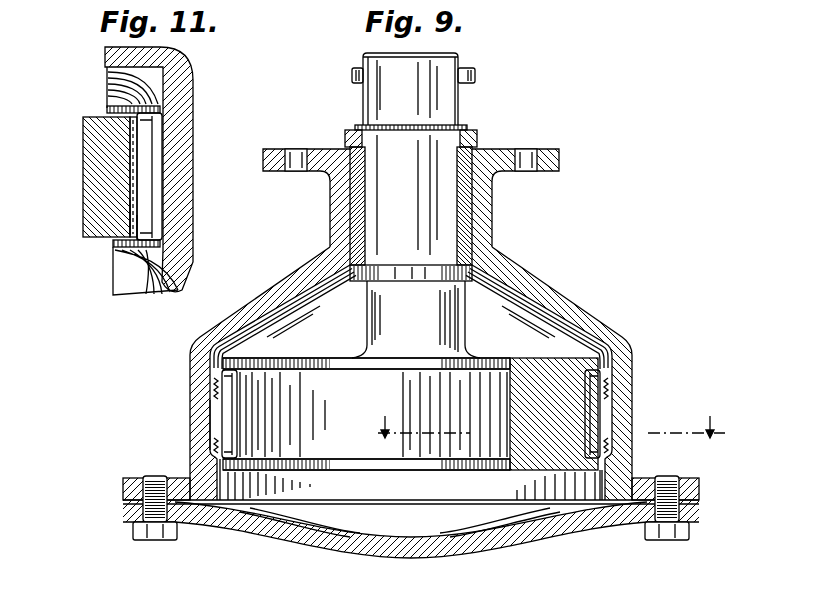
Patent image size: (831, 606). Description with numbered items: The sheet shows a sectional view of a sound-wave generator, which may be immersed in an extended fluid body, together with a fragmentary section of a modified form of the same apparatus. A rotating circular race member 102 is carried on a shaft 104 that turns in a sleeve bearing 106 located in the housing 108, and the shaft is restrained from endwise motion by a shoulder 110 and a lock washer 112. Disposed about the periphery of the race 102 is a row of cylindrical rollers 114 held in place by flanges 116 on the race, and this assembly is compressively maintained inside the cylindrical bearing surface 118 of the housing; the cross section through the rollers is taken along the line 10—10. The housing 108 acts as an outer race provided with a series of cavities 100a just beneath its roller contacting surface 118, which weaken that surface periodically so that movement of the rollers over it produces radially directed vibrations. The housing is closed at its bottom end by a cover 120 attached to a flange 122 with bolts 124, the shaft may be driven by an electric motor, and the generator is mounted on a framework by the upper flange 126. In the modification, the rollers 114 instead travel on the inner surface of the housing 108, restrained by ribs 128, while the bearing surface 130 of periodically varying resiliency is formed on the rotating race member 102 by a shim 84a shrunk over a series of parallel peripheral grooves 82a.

In FIG. 9, the section line 10 is at (551, 419).
In FIG. 11, the parallel peripheral grooves 82a is at (128, 212).
In FIG. 11, the shim 84a is at (137, 228).
In FIG. 9, the cavities 100a is at (217, 427).
In FIG. 9, the rotating circular race member 102 is at (482, 376).
In FIG. 11, the rotating circular race member 102 is at (92, 136).
In FIG. 9, the shaft 104 is at (382, 102).
In FIG. 9, the sleeve bearing 106 is at (348, 212).
In FIG. 9, the housing 108 is at (552, 297).
In FIG. 11, the housing 108 is at (186, 126).
In FIG. 9, the shoulder 110 is at (353, 283).
In FIG. 9, the lock washer 112 is at (463, 127).
In FIG. 9, the cylindrical rollers 114 is at (228, 386).
In FIG. 11, the cylindrical rollers 114 is at (148, 153).
In FIG. 9, the flanges 116 is at (325, 362).
In FIG. 9, the cylindrical bearing surface 118 is at (218, 396).
In FIG. 9, the cover 120 is at (455, 548).
In FIG. 9, the flange 122 is at (128, 488).
In FIG. 9, the bolts 124 is at (155, 535).
In FIG. 9, the upper flange 126 is at (563, 160).
In FIG. 11, the ribs 128 is at (147, 101).
In FIG. 11, the bearing surface 130 is at (134, 197).